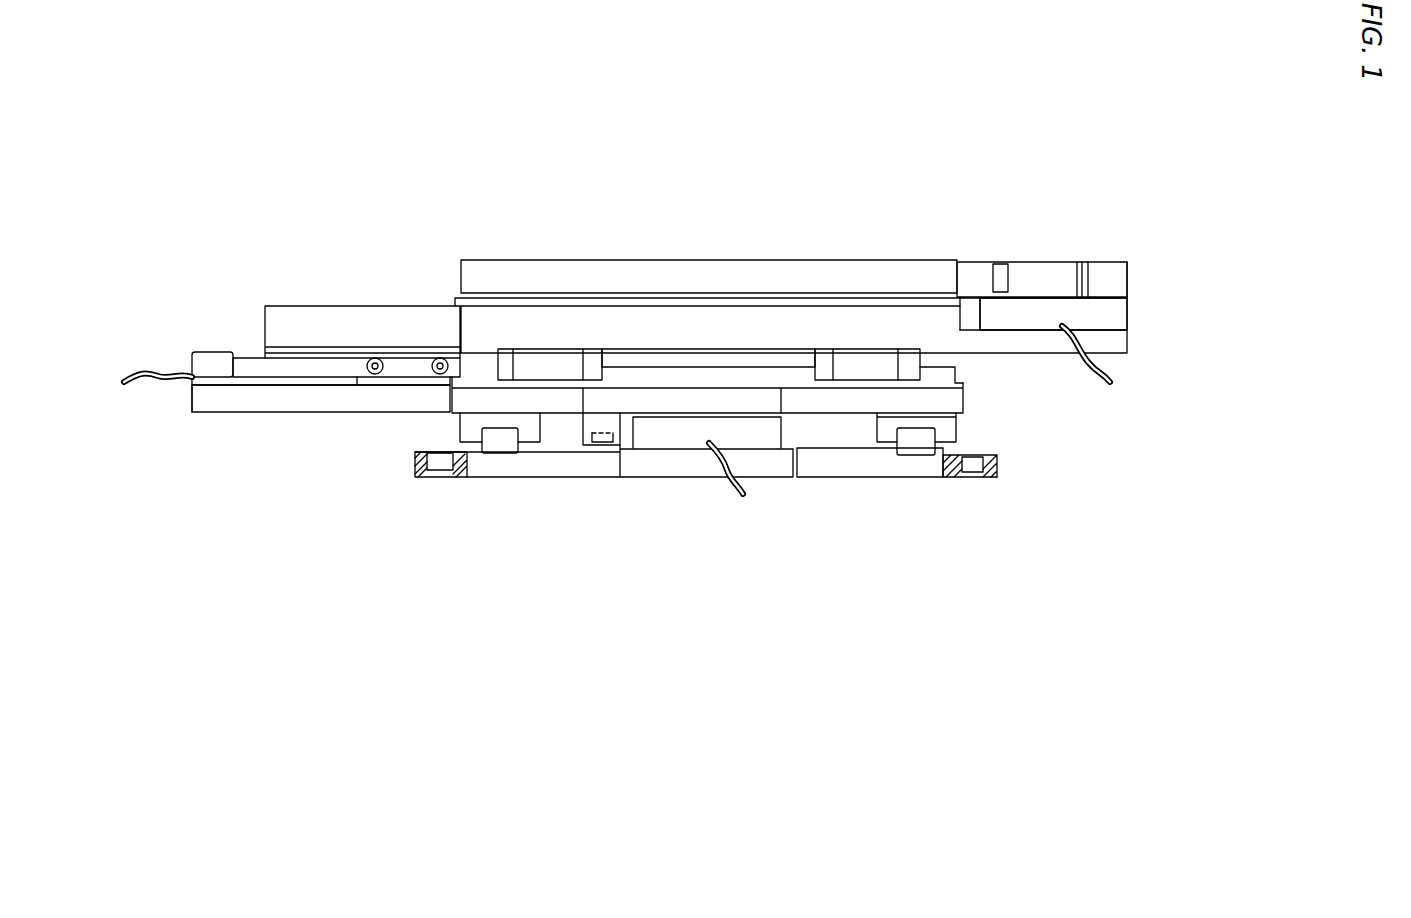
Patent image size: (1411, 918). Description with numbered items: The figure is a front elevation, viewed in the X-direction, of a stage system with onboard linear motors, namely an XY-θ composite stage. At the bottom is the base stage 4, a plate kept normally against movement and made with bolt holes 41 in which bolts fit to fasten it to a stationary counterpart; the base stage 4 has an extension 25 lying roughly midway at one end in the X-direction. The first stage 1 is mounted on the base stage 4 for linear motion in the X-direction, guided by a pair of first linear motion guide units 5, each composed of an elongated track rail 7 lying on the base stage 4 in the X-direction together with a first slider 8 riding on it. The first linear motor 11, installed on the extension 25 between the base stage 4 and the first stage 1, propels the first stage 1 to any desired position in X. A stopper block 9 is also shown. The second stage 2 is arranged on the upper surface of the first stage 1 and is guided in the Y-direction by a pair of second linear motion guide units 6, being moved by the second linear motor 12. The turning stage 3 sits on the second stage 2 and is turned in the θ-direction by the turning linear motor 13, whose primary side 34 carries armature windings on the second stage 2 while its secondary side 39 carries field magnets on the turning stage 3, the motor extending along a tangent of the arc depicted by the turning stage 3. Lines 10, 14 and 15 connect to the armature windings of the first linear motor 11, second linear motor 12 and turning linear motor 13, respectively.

The first stage 1 is at (945, 400).
The second stage 2 is at (742, 307).
The turning stage 3 is at (766, 272).
The base stage 4 is at (706, 526).
The first linear motion guide units 5 is at (476, 436).
The second linear motion guide units 6 is at (530, 352).
The track rail 7 is at (705, 378).
The bearing blocks 8 is at (558, 360).
The stopper block 9 is at (592, 431).
The line 10 is at (730, 484).
The first linear motor 11 is at (752, 433).
The second linear motor 12 is at (257, 368).
The turning linear motor 13 is at (1110, 312).
The line 14 is at (1112, 374).
The line 15 is at (148, 393).
The extension 25 is at (677, 466).
The primary side 34 is at (1060, 310).
The secondary side 39 is at (1047, 268).
The bolt hole 41 is at (432, 468).